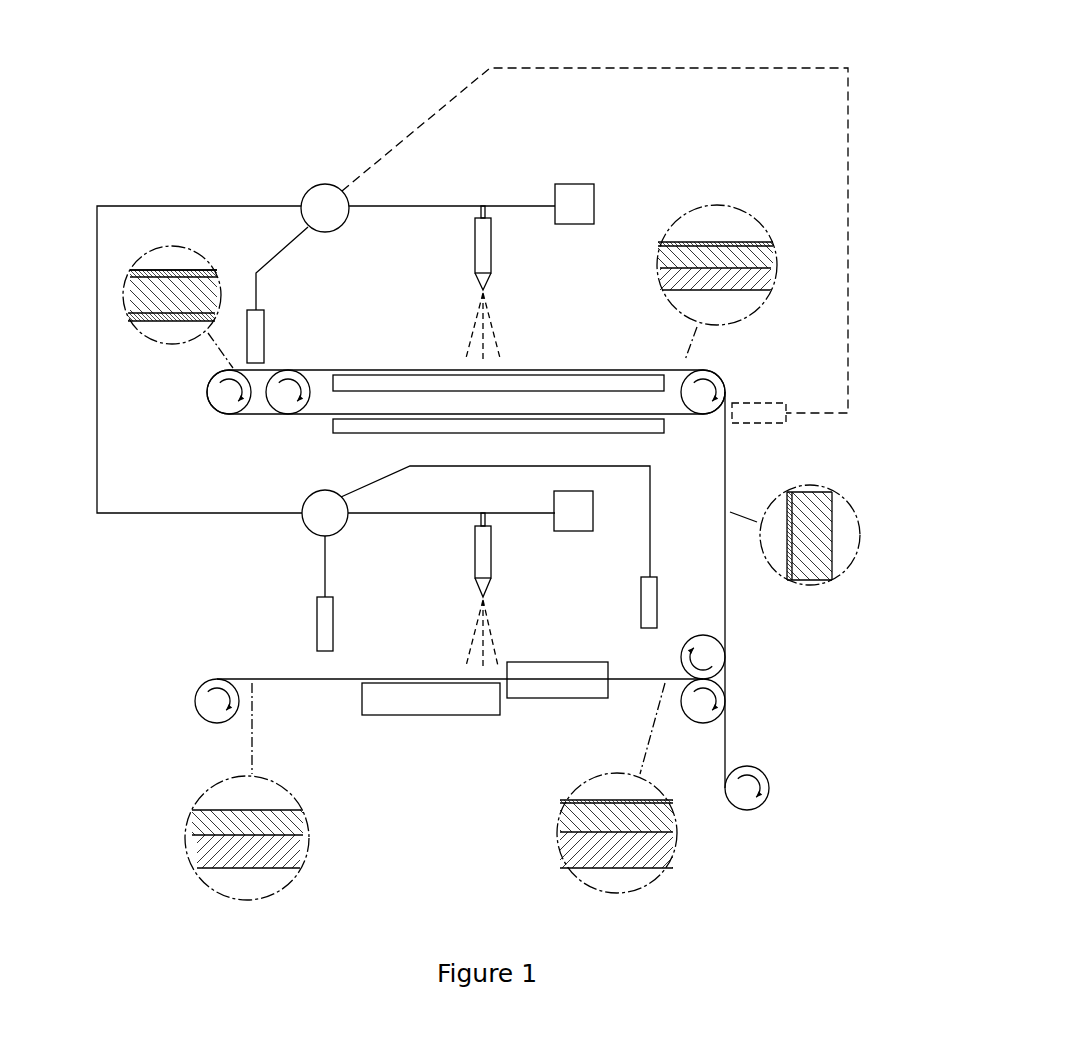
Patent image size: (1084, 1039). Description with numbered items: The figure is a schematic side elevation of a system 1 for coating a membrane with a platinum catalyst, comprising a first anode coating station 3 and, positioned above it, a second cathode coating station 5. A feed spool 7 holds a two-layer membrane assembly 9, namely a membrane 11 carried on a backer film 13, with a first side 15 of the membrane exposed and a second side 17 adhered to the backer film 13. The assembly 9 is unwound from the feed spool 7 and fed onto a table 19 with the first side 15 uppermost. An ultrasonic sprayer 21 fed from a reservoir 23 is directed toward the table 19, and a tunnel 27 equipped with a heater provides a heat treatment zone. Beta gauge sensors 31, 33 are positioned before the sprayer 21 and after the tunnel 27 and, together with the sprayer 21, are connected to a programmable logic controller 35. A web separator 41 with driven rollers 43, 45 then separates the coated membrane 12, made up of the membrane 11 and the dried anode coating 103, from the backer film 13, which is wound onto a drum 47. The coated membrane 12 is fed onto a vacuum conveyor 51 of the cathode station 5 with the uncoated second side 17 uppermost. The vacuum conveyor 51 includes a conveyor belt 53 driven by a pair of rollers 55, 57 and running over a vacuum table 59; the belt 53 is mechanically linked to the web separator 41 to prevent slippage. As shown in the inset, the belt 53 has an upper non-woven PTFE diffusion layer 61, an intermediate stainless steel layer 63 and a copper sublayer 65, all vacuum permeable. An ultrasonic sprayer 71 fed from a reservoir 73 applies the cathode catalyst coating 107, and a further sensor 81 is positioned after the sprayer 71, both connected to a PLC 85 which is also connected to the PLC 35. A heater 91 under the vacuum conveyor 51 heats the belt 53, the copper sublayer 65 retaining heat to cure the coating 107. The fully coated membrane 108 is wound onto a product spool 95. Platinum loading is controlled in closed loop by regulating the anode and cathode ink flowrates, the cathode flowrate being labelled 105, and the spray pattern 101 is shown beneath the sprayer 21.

The system for coating a membrane 1 is at (383, 112).
The first anode coating station 3 is at (190, 582).
The second cathode coating station 5 is at (524, 298).
The feed spool 7 is at (197, 712).
The two-layer membrane assembly 9 is at (238, 678).
The membrane 11 is at (142, 297).
The coated membrane 12 is at (727, 452).
The backer film 13 is at (259, 684).
The first side 15 is at (723, 497).
The second side 17 is at (641, 363).
The table 19 is at (418, 700).
The ultrasonic sprayer 21 is at (492, 567).
The reservoir 23 is at (578, 532).
The tunnel 27 is at (542, 700).
The sensor 31 is at (316, 606).
The sensor 33 is at (659, 594).
The programmable logic controller 35 is at (302, 528).
The web separator 41 is at (702, 710).
The driven roller 43 is at (688, 664).
The driven roller 45 is at (697, 727).
The drum 47 is at (770, 804).
The vacuum conveyor 51 is at (492, 316).
The conveyor belt 53 is at (716, 228).
The roller 55 is at (727, 396).
The roller 57 is at (281, 414).
The vacuum table 59 is at (557, 382).
The upper diffusion layer 61 is at (748, 242).
The intermediate stainless steel layer 63 is at (765, 258).
The copper sublayer 65 is at (762, 278).
The ultrasonic sprayer 71 is at (492, 257).
The reservoir 73 is at (577, 184).
The further sensor 81 is at (265, 322).
The PLC 85 is at (320, 186).
The heater 91 is at (354, 428).
The product spool 95 is at (225, 414).
The first spray 101 is at (496, 640).
The anode catalyst coating 103 is at (176, 320).
The ink flowrate 105 is at (500, 345).
The cathode catalyst coating 107 is at (176, 270).
The fully coated membrane 108 is at (212, 266).